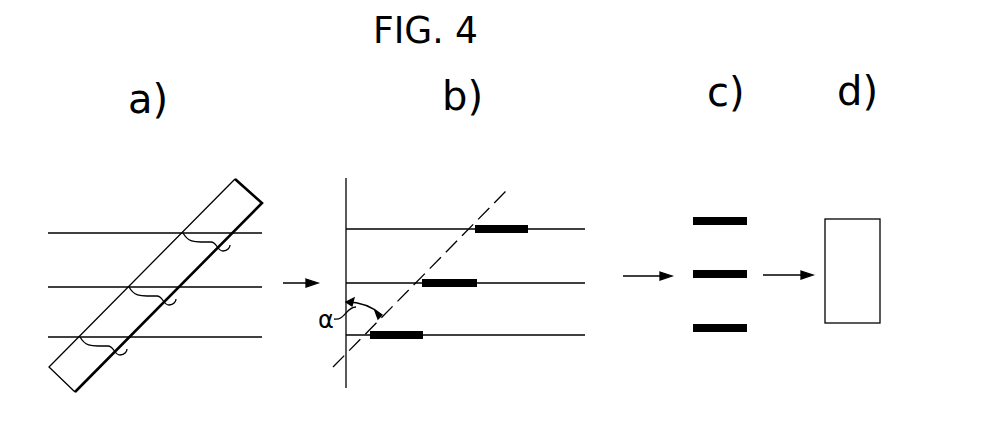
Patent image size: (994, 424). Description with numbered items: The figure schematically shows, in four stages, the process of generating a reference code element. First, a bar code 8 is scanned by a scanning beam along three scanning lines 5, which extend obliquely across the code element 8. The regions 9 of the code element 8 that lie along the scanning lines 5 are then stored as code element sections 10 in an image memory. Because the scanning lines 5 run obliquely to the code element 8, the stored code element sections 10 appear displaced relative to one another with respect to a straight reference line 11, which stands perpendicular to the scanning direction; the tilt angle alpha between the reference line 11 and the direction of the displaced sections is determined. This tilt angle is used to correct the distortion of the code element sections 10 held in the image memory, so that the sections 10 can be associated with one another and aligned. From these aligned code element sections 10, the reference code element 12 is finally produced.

The scanning lines 5 is at (58, 233).
The bar code 8 is at (232, 200).
The regions of the code element 9 is at (225, 250).
The code element sections 10 is at (526, 233).
The straight reference line 11 is at (346, 196).
The reference code element 12 is at (855, 310).